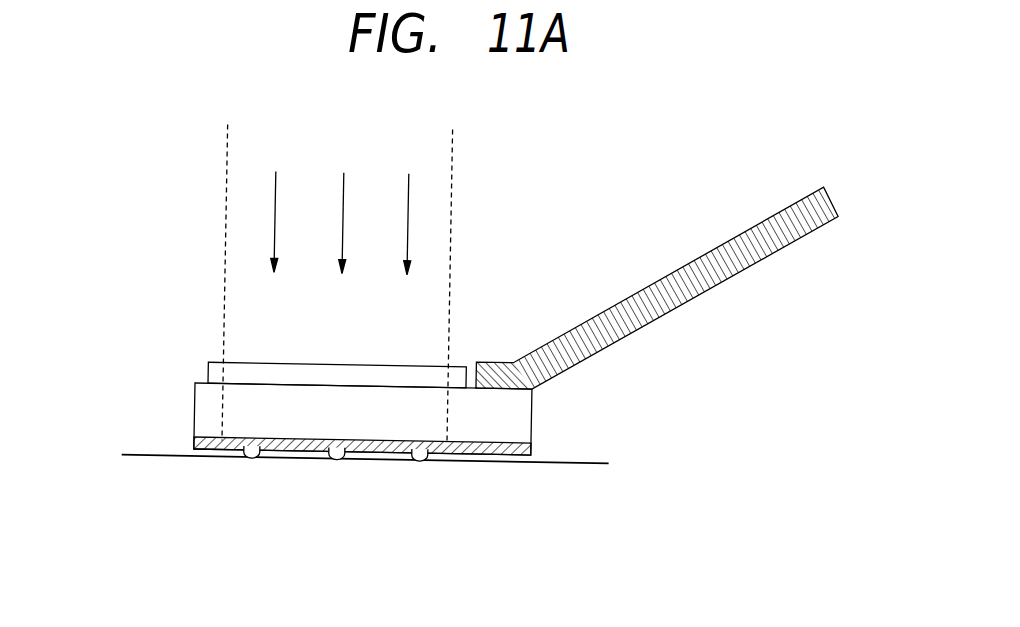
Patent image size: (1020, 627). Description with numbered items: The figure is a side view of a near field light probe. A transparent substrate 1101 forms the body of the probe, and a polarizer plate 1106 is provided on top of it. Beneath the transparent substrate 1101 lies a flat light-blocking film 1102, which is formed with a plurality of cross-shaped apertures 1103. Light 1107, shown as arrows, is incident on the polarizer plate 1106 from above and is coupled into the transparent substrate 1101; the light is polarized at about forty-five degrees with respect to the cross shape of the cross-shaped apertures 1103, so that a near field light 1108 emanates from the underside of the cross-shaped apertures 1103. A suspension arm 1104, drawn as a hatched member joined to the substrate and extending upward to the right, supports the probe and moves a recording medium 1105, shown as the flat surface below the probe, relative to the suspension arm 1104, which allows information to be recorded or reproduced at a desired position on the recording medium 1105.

The transparent substrate 1101 is at (195, 397).
The light-blocking film 1102 is at (195, 443).
The cross-shaped aperture 1103 is at (255, 457).
The suspension arm 1104 is at (650, 288).
The recording medium 1105 is at (557, 478).
The polarizer plate 1106 is at (267, 363).
The light 1107 is at (277, 192).
The near field light 1108 is at (343, 460).